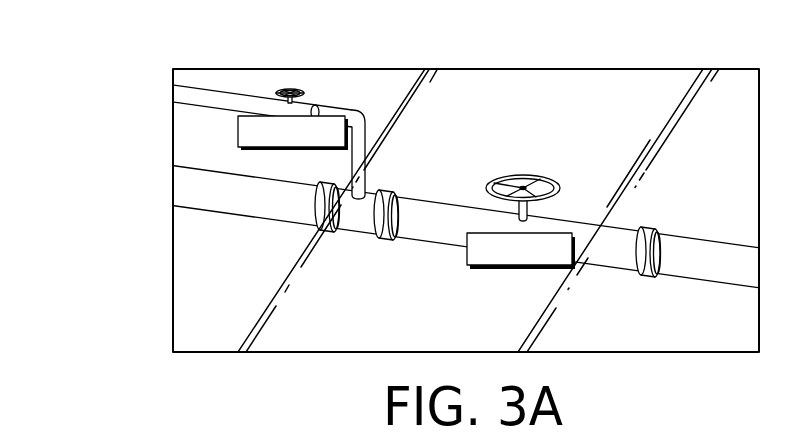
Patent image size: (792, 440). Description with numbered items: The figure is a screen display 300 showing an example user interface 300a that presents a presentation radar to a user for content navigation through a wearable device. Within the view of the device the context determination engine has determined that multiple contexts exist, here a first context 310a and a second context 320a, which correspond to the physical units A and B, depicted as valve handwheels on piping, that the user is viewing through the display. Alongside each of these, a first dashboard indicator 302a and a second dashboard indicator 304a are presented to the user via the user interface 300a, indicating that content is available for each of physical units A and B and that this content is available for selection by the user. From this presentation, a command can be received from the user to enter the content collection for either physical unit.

The screen display 300 is at (690, 46).
The user interface 300a is at (203, 68).
The first dashboard indicator 302a is at (237, 129).
The second dashboard indicator 304a is at (466, 253).
The first context 310a is at (290, 88).
The second context 320a is at (523, 176).